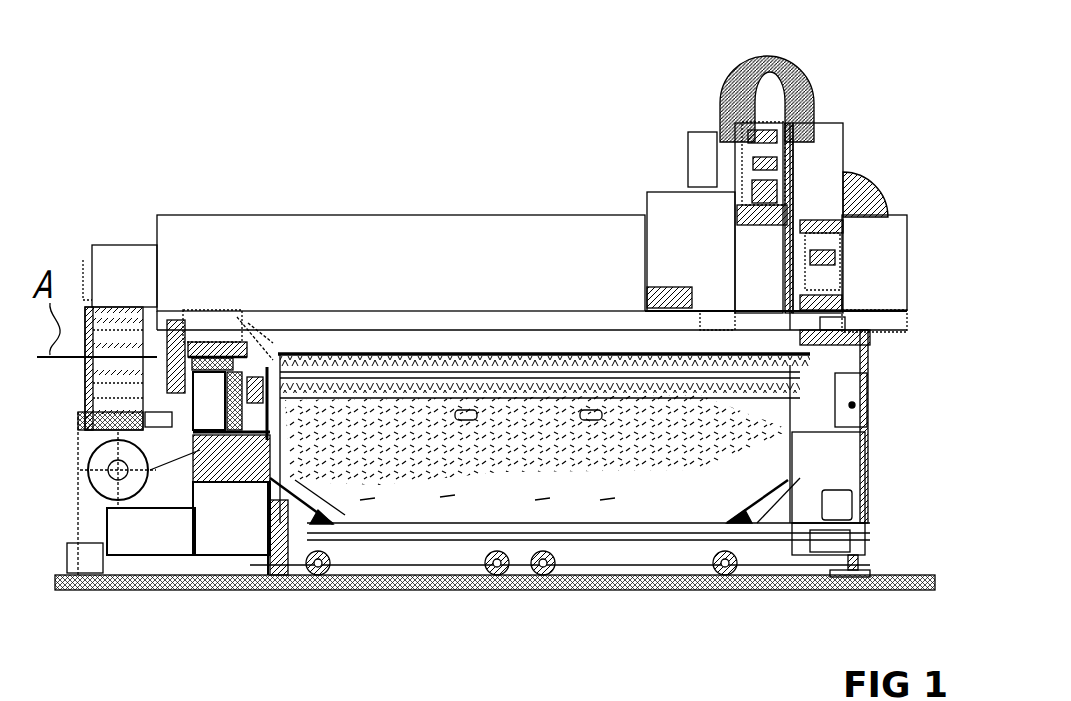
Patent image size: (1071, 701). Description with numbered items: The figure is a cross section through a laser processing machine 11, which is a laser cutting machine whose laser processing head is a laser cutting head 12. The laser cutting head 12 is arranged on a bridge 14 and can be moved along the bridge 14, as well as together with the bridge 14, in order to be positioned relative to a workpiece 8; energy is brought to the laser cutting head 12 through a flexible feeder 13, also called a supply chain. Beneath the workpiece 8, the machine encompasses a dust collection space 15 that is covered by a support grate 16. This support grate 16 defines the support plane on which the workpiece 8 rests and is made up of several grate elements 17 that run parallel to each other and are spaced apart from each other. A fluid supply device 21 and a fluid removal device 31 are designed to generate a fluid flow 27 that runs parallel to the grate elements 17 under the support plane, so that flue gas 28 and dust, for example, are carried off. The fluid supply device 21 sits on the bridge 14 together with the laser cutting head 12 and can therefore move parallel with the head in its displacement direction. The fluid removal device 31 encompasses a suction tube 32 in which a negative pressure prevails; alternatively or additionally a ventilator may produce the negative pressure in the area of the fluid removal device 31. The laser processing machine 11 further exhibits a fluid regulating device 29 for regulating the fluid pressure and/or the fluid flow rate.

The workpiece 8 is at (405, 352).
The laser processing machine 11 is at (228, 172).
The laser cutting head 12 is at (765, 335).
The flexible feeder 13 is at (798, 75).
The bridge 14 is at (437, 247).
The dust collection space 15 is at (452, 498).
The support grate 16 is at (485, 355).
The grate elements 17 is at (650, 377).
The fluid supply device 21 is at (802, 360).
The fluid flow 27 is at (584, 382).
The flue gas 28 is at (398, 458).
The fluid regulating device 29 is at (863, 328).
The fluid removal device 31 is at (82, 496).
The suction tube 32 is at (140, 487).